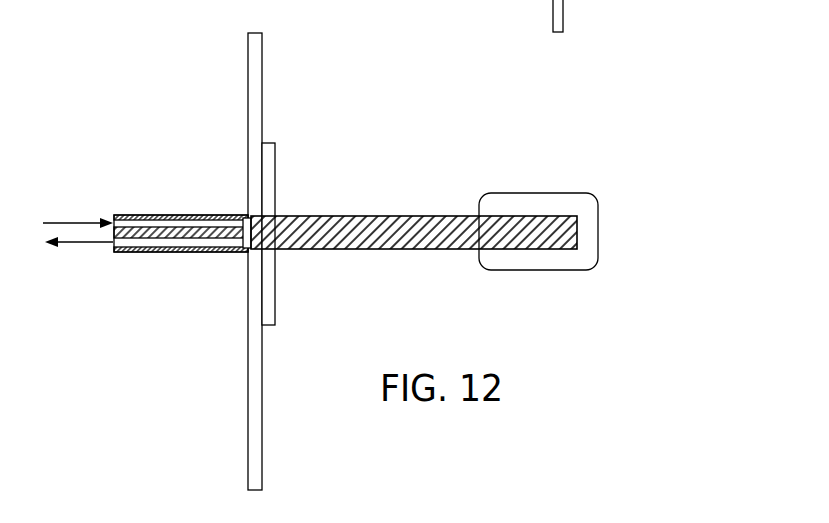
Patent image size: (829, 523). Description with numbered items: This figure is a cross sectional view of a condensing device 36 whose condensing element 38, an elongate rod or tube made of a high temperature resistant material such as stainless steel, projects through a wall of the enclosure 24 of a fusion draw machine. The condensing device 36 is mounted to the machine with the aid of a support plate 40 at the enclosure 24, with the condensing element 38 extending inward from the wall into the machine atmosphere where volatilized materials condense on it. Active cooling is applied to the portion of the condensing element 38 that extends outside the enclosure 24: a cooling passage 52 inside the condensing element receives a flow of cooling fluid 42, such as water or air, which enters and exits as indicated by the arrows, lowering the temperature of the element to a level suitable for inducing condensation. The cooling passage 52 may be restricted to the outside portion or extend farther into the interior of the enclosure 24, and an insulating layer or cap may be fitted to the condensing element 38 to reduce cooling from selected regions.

The enclosure 24 is at (263, 72).
The support plate 40 is at (275, 165).
The cooling passage 52 is at (168, 223).
The condensing element 38 is at (403, 216).
The condensing device 36 is at (373, 142).
The cooling fluid 42 is at (85, 220).